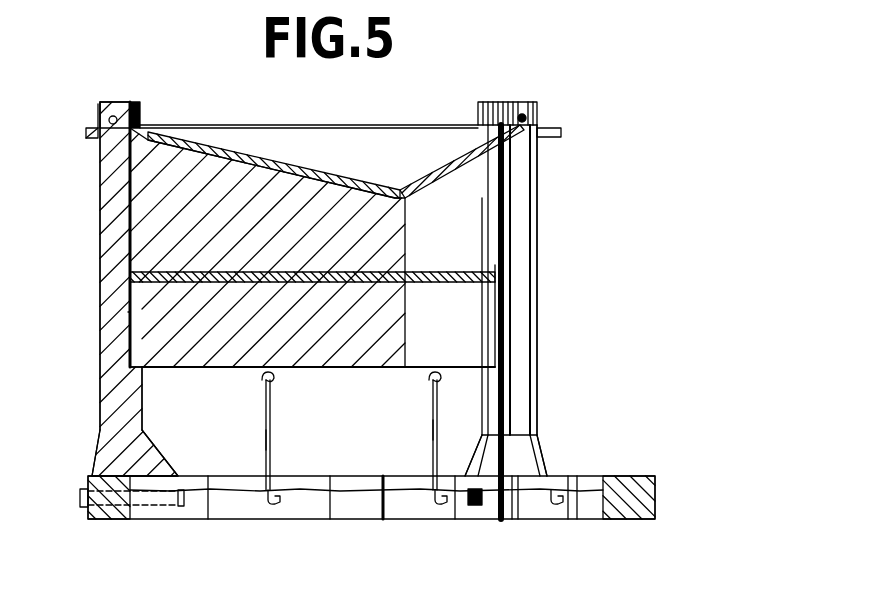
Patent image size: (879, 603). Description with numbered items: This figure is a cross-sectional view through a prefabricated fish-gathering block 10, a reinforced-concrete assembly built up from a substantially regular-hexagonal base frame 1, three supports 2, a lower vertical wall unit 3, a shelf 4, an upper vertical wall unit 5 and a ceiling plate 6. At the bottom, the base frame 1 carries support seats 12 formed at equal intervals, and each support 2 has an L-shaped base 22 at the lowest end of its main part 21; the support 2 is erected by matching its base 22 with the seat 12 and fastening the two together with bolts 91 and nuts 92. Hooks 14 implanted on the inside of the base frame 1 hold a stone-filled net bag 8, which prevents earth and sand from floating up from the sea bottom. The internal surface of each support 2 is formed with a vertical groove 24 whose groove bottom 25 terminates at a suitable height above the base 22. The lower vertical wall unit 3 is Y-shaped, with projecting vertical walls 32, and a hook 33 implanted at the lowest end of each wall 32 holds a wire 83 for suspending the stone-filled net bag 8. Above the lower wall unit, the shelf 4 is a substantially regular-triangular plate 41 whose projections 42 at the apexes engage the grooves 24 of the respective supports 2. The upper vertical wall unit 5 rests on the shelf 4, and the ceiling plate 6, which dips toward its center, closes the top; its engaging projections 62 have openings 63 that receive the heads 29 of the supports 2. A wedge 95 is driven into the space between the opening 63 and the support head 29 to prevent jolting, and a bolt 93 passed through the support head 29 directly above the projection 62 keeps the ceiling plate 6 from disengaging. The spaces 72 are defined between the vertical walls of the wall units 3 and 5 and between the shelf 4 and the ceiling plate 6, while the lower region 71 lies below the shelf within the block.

The base frame 1 is at (635, 477).
The support 2 is at (98, 357).
The lower vertical wall unit 3 is at (142, 362).
The shelf 4 is at (148, 270).
The upper vertical wall unit 5 is at (140, 202).
The ceiling plate 6 is at (222, 126).
The stone-filled net bag 8 is at (335, 486).
The prefabricated fish-gathering block 10 is at (403, 122).
The support seat 12 is at (118, 520).
The hook 14 is at (276, 505).
The main part 21 is at (105, 286).
The L-shaped base 22 is at (105, 452).
The vertical groove 24 is at (488, 110).
The groove bottom 25 is at (135, 373).
The head 29 is at (108, 104).
The vertical wall 32 is at (345, 370).
The hook 33 is at (265, 380).
The regular-triangular plate 41 is at (457, 268).
The projection 42 is at (497, 268).
The engaging projection 62 is at (86, 132).
The opening 63 is at (96, 138).
The lower cavity 71 is at (197, 419).
The space 72 is at (472, 229).
The wire 83 is at (272, 440).
The bolt 91 is at (82, 498).
The nut 92 is at (184, 516).
The bolt 93 is at (113, 116).
The wedge 95 is at (98, 124).